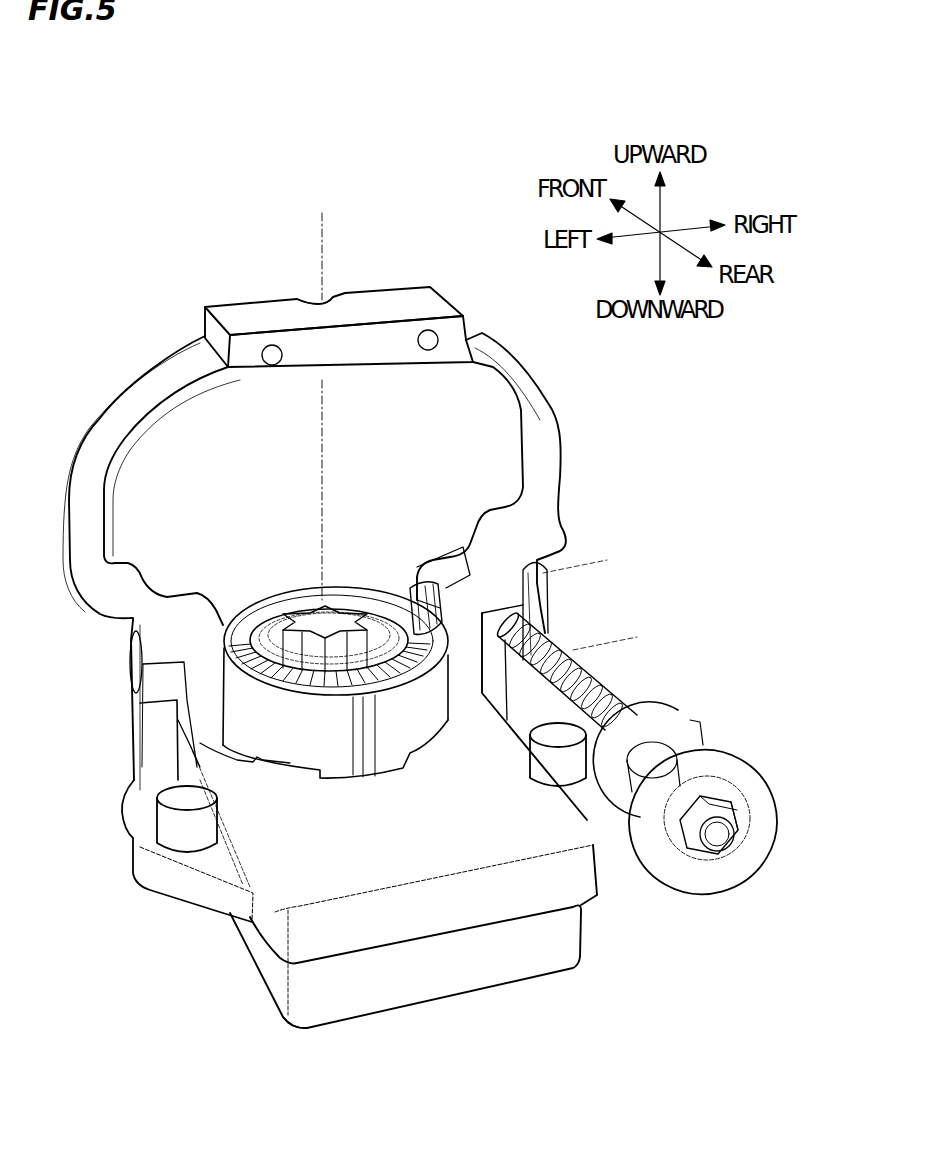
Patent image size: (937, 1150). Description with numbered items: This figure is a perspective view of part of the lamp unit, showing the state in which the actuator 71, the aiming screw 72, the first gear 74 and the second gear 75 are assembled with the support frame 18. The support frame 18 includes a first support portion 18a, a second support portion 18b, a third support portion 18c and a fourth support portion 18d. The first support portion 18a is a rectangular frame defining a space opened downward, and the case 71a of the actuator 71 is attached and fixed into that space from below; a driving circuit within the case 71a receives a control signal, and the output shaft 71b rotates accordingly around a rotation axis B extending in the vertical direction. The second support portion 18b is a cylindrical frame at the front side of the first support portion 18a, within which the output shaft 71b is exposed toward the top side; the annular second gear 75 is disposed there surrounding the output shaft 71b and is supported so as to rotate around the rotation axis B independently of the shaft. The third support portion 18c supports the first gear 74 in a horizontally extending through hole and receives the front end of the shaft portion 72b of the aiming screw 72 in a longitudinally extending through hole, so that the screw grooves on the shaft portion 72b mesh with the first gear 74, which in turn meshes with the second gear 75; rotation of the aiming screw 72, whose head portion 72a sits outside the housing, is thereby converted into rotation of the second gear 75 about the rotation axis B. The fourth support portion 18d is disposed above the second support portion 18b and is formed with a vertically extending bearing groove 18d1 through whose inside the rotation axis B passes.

The support frame 18 is at (361, 509).
The first support portion 18a is at (280, 893).
The second support portion 18b is at (233, 605).
The third support portion 18c is at (455, 565).
The fourth support portion 18d is at (396, 300).
The bearing groove 18d1 is at (305, 297).
The actuator 71 is at (557, 992).
The case 71a is at (277, 1017).
The output shaft 71b is at (305, 605).
The aiming screw 72 is at (643, 782).
The head portion 72a is at (705, 890).
The shaft portion 72b is at (575, 655).
The first gear 74 is at (548, 575).
The second gear 75 is at (362, 585).
The rotation axis B is at (322, 463).